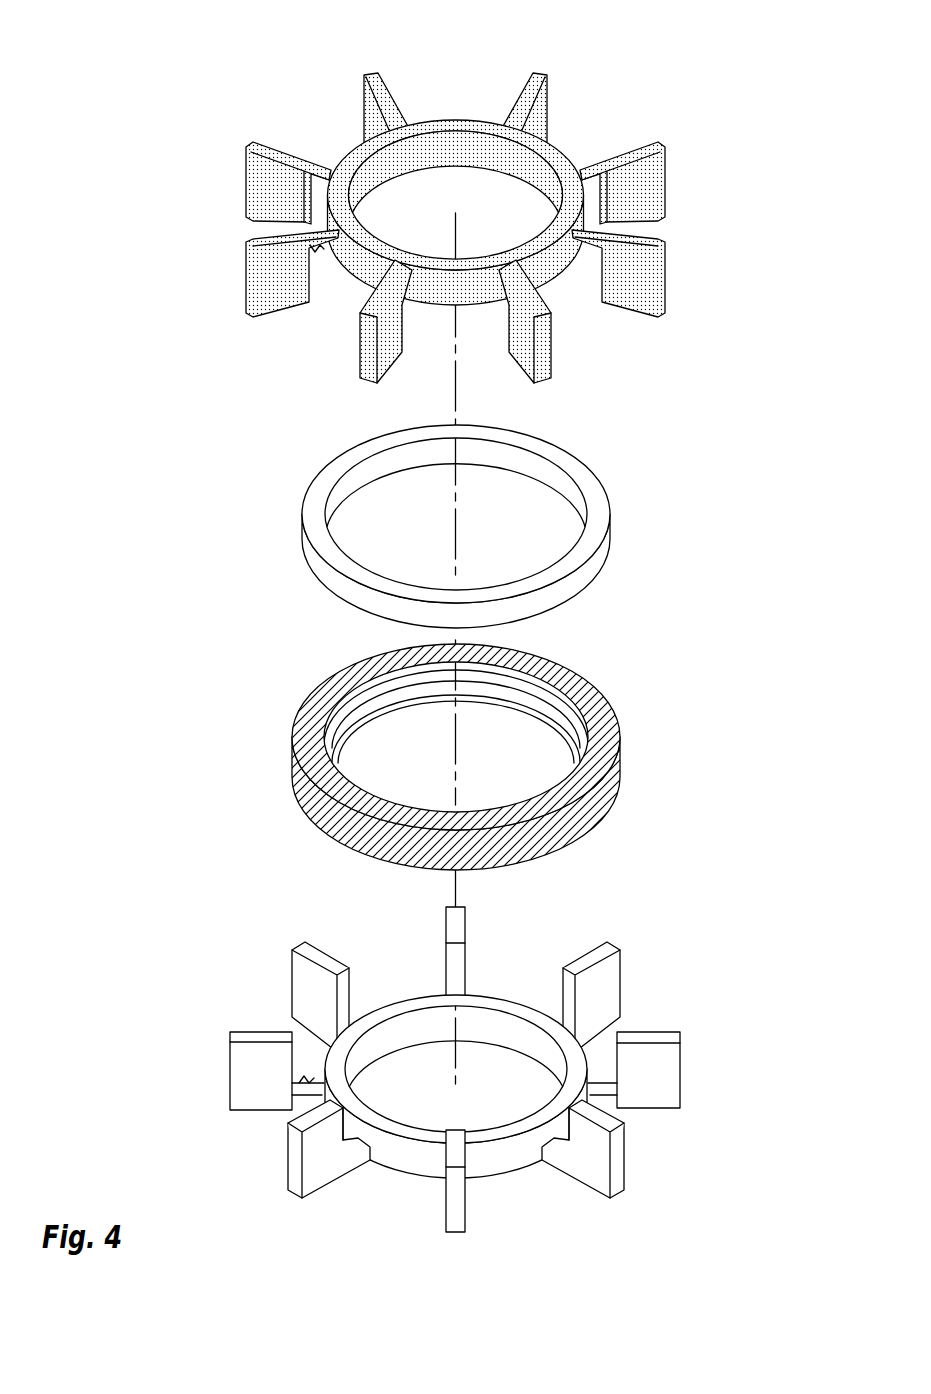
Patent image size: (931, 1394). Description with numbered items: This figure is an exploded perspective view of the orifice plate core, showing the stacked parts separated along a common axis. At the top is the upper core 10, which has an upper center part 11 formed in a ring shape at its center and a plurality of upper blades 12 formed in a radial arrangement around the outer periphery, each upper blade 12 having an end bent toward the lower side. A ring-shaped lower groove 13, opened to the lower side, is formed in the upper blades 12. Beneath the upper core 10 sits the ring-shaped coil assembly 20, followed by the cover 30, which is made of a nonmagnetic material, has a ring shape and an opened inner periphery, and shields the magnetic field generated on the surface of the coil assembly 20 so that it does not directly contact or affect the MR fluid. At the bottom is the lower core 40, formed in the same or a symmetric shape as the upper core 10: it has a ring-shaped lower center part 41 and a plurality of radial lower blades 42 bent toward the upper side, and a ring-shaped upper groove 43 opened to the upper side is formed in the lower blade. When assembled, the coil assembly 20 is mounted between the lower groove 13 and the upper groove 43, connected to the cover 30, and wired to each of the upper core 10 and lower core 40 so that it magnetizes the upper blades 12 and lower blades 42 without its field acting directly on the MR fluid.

The upper core 10 is at (689, 87).
The upper center part 11 is at (545, 150).
The upper blade 12 is at (643, 265).
The lower groove 13 is at (314, 253).
The coil assembly 20 is at (610, 451).
The cover 30 is at (646, 695).
The lower core 40 is at (660, 941).
The lower center part 41 is at (395, 1010).
The lower blade 42 is at (247, 1083).
The upper groove 43 is at (303, 1080).